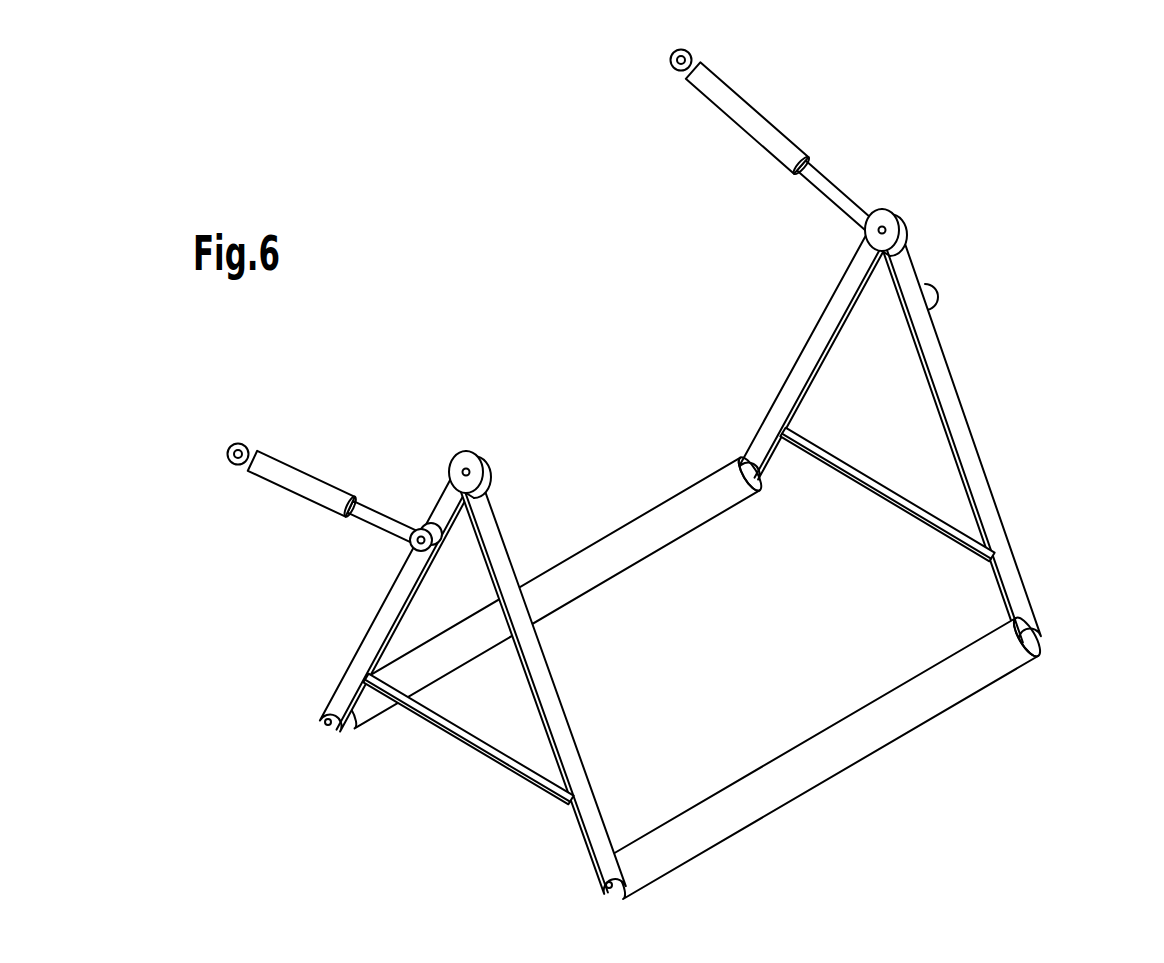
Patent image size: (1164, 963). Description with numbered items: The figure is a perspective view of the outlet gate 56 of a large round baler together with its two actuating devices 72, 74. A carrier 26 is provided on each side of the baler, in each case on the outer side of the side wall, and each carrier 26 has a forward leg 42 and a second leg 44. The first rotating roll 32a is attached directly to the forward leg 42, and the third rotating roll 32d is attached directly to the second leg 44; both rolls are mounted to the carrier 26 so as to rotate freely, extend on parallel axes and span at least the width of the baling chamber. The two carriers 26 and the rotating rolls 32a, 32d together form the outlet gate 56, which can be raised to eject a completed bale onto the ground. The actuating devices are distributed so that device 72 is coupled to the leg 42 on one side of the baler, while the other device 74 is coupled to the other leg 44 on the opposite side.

The outlet gate 56 is at (666, 471).
The actuating device 74 is at (797, 120).
The actuating device 72 is at (318, 456).
The second leg 44 is at (967, 418).
The forward leg 42 is at (396, 584).
The carrier 26 is at (998, 473).
The first rotating roll 32a is at (602, 553).
The third rotating roll 32d is at (838, 753).